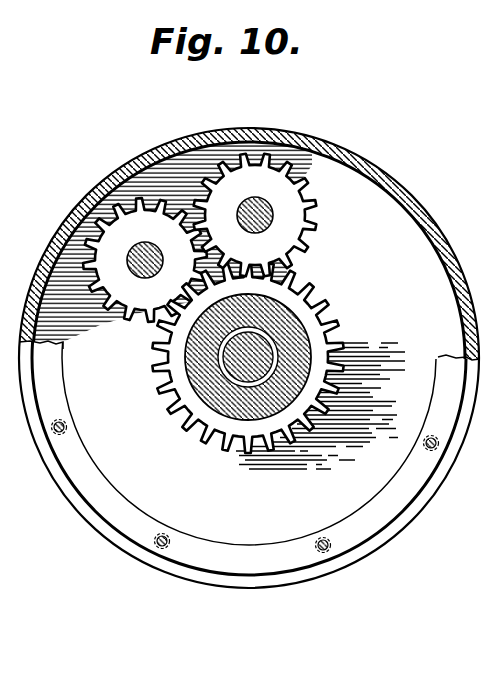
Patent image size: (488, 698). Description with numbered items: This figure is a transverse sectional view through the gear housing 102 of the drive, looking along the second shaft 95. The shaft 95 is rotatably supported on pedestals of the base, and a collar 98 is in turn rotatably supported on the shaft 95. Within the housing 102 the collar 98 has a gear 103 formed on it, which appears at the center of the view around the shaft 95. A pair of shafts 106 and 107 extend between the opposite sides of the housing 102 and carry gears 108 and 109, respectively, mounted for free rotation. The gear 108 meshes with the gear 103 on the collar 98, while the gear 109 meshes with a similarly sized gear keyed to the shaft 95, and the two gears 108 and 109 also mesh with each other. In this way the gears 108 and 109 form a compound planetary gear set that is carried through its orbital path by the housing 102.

The housing 102 is at (426, 207).
The gear 103 is at (306, 314).
The second shaft 95 is at (262, 350).
The collar 98 is at (282, 403).
The shaft 106 is at (268, 228).
The gear 108 is at (291, 213).
The gear 109 is at (100, 290).
The shaft 107 is at (143, 278).